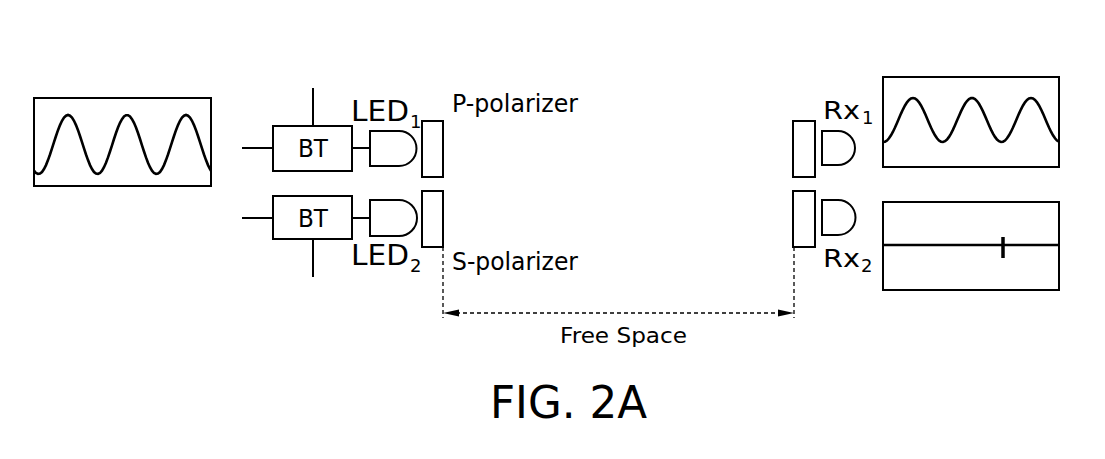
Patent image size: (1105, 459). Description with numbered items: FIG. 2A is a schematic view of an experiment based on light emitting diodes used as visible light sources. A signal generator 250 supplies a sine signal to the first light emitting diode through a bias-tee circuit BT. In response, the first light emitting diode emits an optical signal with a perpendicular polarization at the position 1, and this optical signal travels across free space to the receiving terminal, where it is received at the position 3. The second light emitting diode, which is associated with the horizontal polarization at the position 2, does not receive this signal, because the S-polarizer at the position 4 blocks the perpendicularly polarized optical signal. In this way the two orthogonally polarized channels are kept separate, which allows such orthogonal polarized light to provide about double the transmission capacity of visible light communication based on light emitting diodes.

The signal generator 250 is at (122, 97).
The position 1 is at (452, 149).
The position 2 is at (452, 219).
The position 3 is at (786, 149).
The position 4 is at (786, 219).